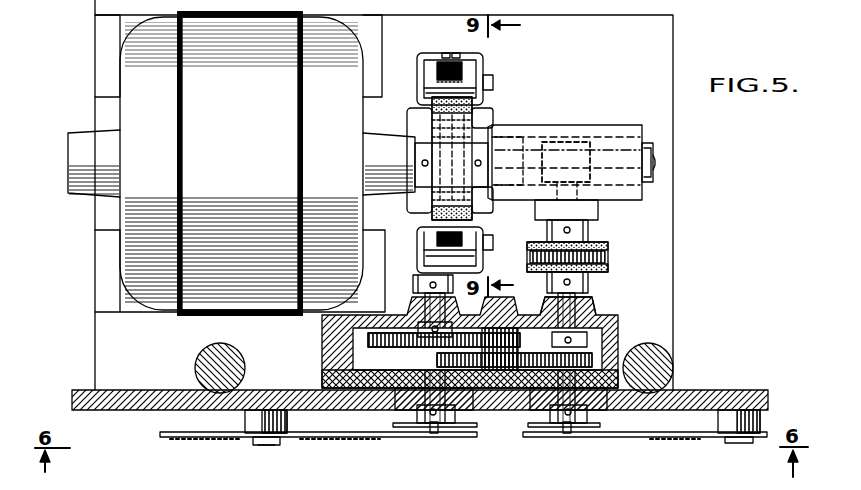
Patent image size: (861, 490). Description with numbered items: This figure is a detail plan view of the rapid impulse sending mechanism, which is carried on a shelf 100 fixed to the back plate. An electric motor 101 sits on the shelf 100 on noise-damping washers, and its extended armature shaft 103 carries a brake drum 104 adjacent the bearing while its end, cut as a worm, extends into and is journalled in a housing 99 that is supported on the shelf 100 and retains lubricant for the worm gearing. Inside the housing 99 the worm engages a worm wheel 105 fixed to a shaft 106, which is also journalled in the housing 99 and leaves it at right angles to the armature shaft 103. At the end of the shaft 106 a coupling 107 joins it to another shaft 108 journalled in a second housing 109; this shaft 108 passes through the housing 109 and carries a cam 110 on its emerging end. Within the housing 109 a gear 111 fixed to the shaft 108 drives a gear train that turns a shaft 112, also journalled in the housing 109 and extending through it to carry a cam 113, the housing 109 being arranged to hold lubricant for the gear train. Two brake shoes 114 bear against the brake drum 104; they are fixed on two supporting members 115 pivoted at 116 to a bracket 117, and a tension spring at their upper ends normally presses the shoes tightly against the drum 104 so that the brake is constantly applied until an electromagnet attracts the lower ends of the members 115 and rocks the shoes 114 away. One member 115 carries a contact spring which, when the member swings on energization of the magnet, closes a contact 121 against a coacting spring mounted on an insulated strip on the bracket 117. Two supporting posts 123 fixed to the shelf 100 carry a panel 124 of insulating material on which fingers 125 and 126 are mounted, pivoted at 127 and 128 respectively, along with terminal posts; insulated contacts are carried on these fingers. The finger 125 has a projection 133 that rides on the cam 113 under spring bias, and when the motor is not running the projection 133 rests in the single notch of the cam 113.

The housing 99 is at (618, 128).
The shelf 100 is at (665, 17).
The electric motor 101 is at (139, 211).
The armature shaft 103 is at (415, 163).
The brake drum 104 is at (472, 122).
The worm wheel 105 is at (545, 173).
The shaft 106 is at (570, 214).
The coupling 107 is at (608, 255).
The shaft 108 is at (592, 300).
The housing 109 is at (618, 322).
The cam 110 is at (587, 437).
The gear 111 is at (600, 345).
The shaft 112 is at (430, 360).
The cam 113 is at (483, 432).
The brake shoes 114 is at (432, 108).
The supporting members 115 is at (427, 238).
The pivot 116 is at (487, 62).
The bracket 117 is at (417, 53).
The contact 121 is at (463, 75).
The supporting posts 123 is at (197, 362).
The panel 124 is at (262, 392).
The finger 125 is at (385, 438).
The finger 126 is at (640, 437).
The pivot 127 is at (257, 443).
The pivot 128 is at (735, 443).
The projection 133 is at (435, 432).